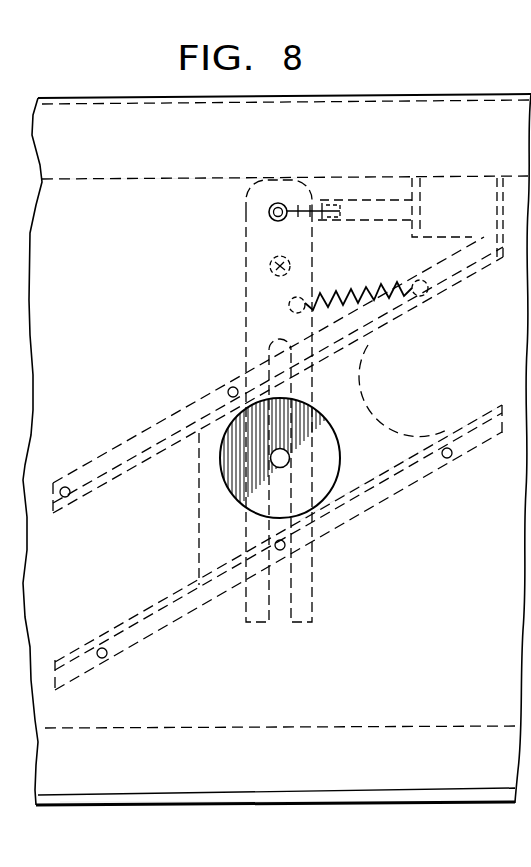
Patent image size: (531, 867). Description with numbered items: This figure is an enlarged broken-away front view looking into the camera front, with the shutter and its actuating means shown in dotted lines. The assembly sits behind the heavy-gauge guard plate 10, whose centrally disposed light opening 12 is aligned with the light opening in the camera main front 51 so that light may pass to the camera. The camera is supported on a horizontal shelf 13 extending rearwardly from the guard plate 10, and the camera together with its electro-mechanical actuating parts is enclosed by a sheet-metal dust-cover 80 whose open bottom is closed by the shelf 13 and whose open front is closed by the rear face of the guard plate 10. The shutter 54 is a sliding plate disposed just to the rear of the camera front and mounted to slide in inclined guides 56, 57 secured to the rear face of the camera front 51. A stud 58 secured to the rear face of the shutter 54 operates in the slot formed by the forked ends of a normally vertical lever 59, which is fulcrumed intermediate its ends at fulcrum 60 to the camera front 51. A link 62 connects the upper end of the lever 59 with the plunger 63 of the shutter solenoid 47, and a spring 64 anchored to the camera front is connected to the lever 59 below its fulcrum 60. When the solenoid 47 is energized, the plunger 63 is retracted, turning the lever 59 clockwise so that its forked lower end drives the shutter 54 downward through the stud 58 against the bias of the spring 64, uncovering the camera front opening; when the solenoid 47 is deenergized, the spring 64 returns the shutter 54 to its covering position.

The dust-cover 80 is at (110, 102).
The guard plate 10 is at (332, 706).
The shelf 13 is at (327, 803).
The camera main front 51 is at (167, 200).
The shutter solenoid 47 is at (455, 184).
The plunger 63 is at (363, 208).
The link 62 is at (306, 196).
The spring 64 is at (344, 296).
The fulcrum 60 is at (268, 263).
The lever 59 is at (256, 329).
The guide 56 is at (93, 478).
The guide 57 is at (161, 618).
The shutter 54 is at (421, 470).
The light opening 12 is at (343, 448).
The stud 58 is at (280, 458).